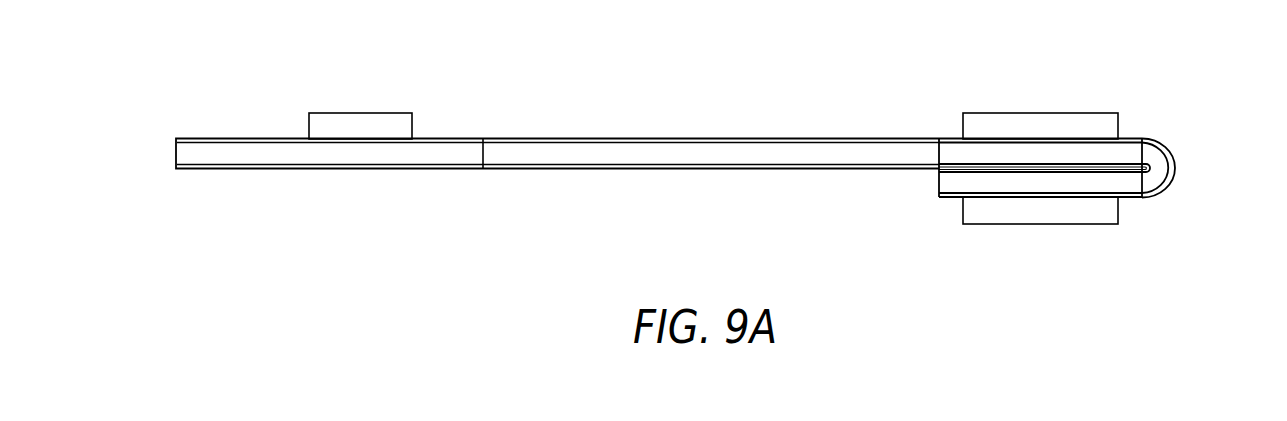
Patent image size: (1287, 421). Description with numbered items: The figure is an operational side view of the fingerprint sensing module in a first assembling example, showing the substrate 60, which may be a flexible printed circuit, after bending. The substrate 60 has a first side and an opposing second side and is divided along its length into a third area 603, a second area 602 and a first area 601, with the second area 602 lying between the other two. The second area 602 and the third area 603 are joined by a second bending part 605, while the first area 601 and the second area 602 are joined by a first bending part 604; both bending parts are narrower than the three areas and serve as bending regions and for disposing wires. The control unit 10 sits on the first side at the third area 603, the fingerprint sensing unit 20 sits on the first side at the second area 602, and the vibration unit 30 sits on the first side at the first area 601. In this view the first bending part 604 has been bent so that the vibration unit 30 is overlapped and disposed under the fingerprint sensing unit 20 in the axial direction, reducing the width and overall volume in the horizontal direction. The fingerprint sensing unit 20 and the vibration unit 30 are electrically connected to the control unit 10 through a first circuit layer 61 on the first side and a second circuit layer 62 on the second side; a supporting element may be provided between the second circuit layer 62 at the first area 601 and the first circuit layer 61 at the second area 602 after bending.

The control unit 10 is at (359, 124).
The fingerprint sensing unit 20 is at (1042, 124).
The vibration unit 30 is at (1035, 210).
The substrate 60 is at (717, 152).
The first circuit layer 61 is at (1112, 171).
The second circuit layer 62 is at (1125, 163).
The first area 601 is at (950, 183).
The second area 602 is at (955, 152).
The third area 603 is at (332, 155).
The first bending part 604 is at (1163, 168).
The second bending part 605 is at (708, 157).